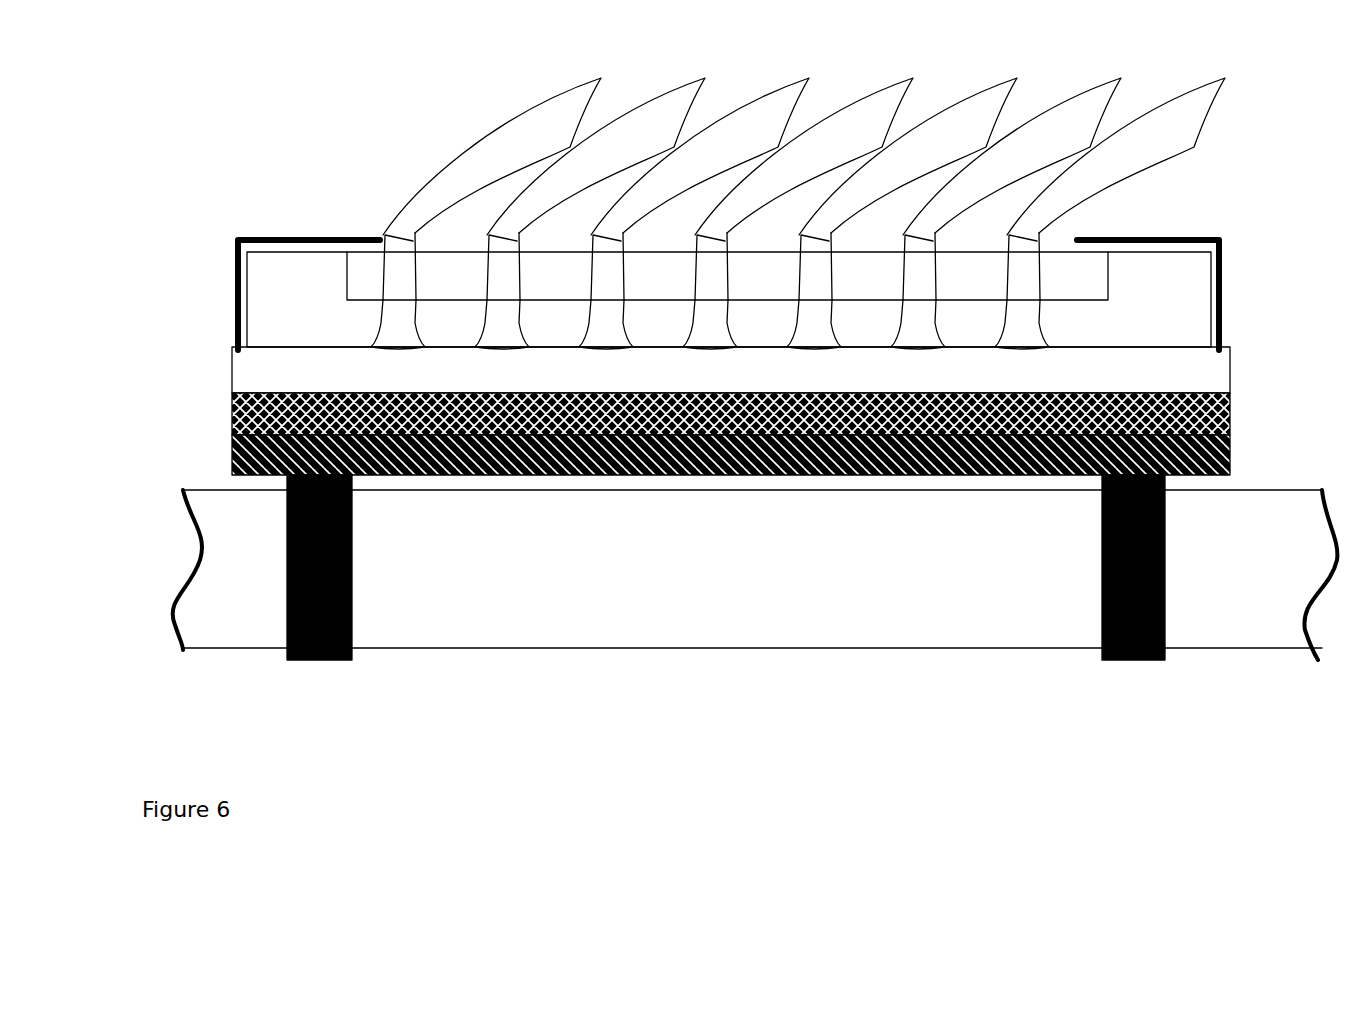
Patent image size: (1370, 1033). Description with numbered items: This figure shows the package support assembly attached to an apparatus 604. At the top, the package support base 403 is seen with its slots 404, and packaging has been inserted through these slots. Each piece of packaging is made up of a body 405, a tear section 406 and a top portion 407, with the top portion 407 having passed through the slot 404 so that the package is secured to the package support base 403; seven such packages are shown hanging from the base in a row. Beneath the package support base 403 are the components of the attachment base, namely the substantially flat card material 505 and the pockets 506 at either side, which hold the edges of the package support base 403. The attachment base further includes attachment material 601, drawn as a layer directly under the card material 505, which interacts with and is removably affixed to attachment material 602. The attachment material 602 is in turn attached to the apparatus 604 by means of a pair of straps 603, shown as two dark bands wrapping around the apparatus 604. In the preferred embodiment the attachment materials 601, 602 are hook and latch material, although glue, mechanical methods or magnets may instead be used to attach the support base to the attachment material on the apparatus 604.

The package support base 403 is at (330, 291).
The slot 404 is at (390, 277).
The body 405 is at (505, 112).
The tear section 406 is at (392, 212).
The top portion 407 is at (1045, 333).
The substantially flat card material 505 is at (216, 381).
The pocket 506 is at (1238, 277).
The attachment material 601 is at (1246, 413).
The attachment material 602 is at (1262, 473).
The strap 603 is at (368, 587).
The apparatus 604 is at (1044, 645).